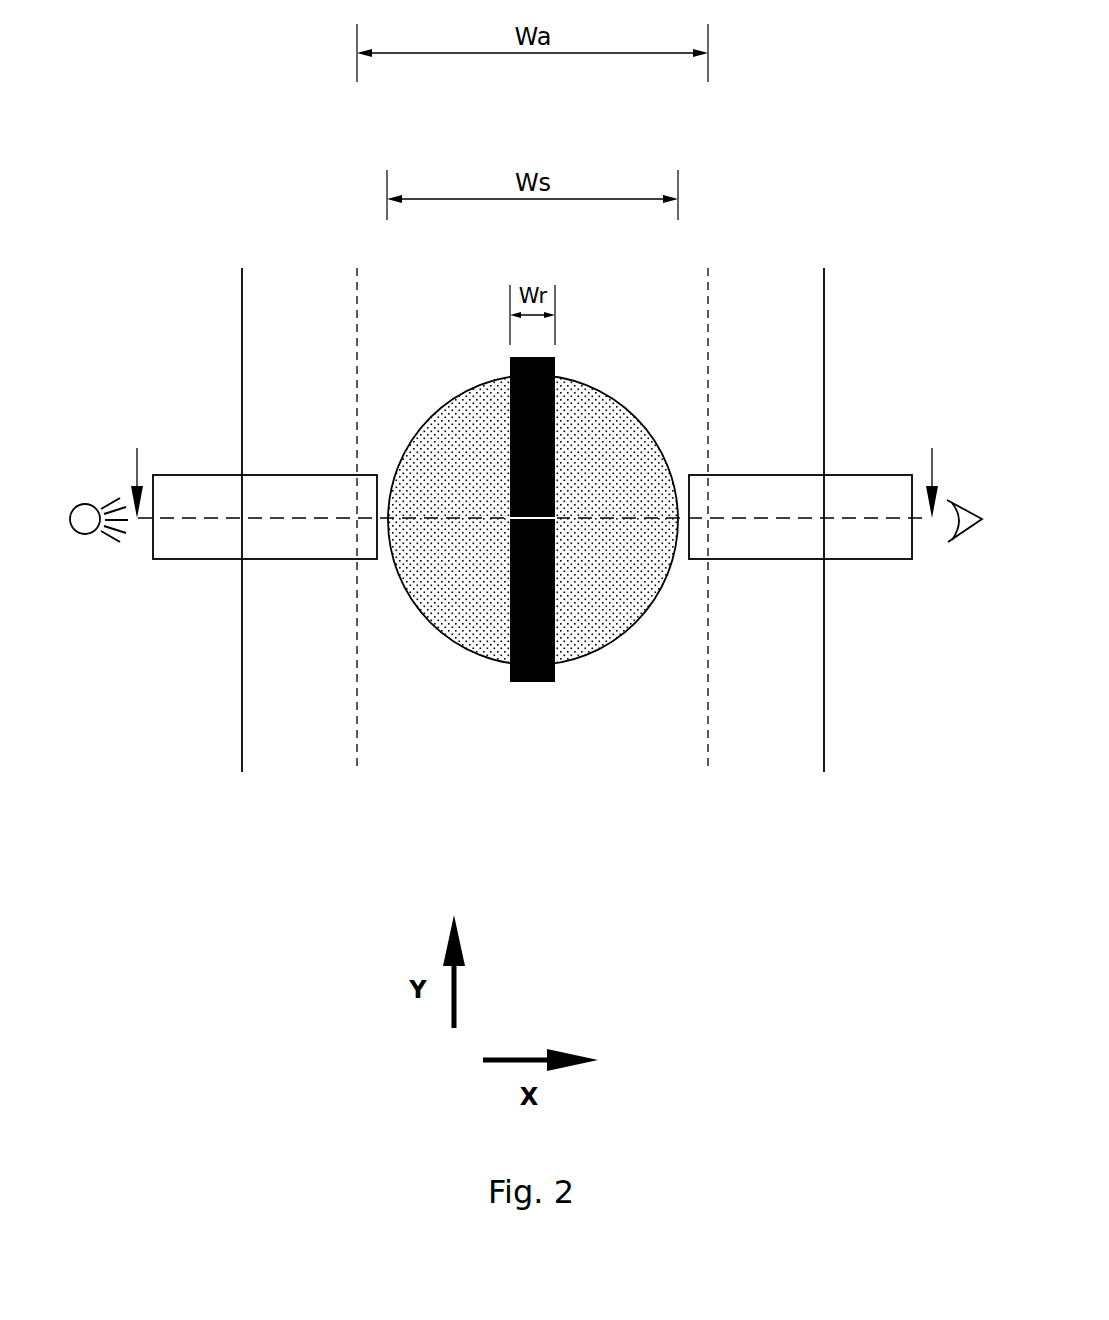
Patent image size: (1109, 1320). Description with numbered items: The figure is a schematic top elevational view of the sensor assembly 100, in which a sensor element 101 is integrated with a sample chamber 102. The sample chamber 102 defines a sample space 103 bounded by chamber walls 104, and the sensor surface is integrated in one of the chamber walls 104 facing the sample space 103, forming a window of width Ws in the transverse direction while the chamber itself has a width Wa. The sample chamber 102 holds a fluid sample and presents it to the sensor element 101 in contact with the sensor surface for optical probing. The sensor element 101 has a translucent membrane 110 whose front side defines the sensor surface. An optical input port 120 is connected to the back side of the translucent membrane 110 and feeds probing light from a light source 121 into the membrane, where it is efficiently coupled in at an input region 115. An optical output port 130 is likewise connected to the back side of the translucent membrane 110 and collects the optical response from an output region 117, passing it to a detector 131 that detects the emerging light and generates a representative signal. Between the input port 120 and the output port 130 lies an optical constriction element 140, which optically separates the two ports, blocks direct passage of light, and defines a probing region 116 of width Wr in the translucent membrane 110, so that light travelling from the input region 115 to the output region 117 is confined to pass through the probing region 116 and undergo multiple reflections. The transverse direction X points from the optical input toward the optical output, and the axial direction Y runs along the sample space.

The sensor assembly 100 is at (318, 893).
The sensor element 101 is at (624, 368).
The sample chamber 102 is at (772, 781).
The sample space 103 is at (451, 349).
The chamber walls 104 is at (357, 718).
The translucent membrane 110 is at (483, 600).
The input region 115 is at (473, 527).
The probing region 116 is at (566, 536).
The output region 117 is at (592, 525).
The optical input port 120 is at (263, 524).
The light source 121 is at (85, 534).
The optical output port 130 is at (802, 525).
The detector 131 is at (962, 545).
The optical constriction element 140 is at (537, 683).